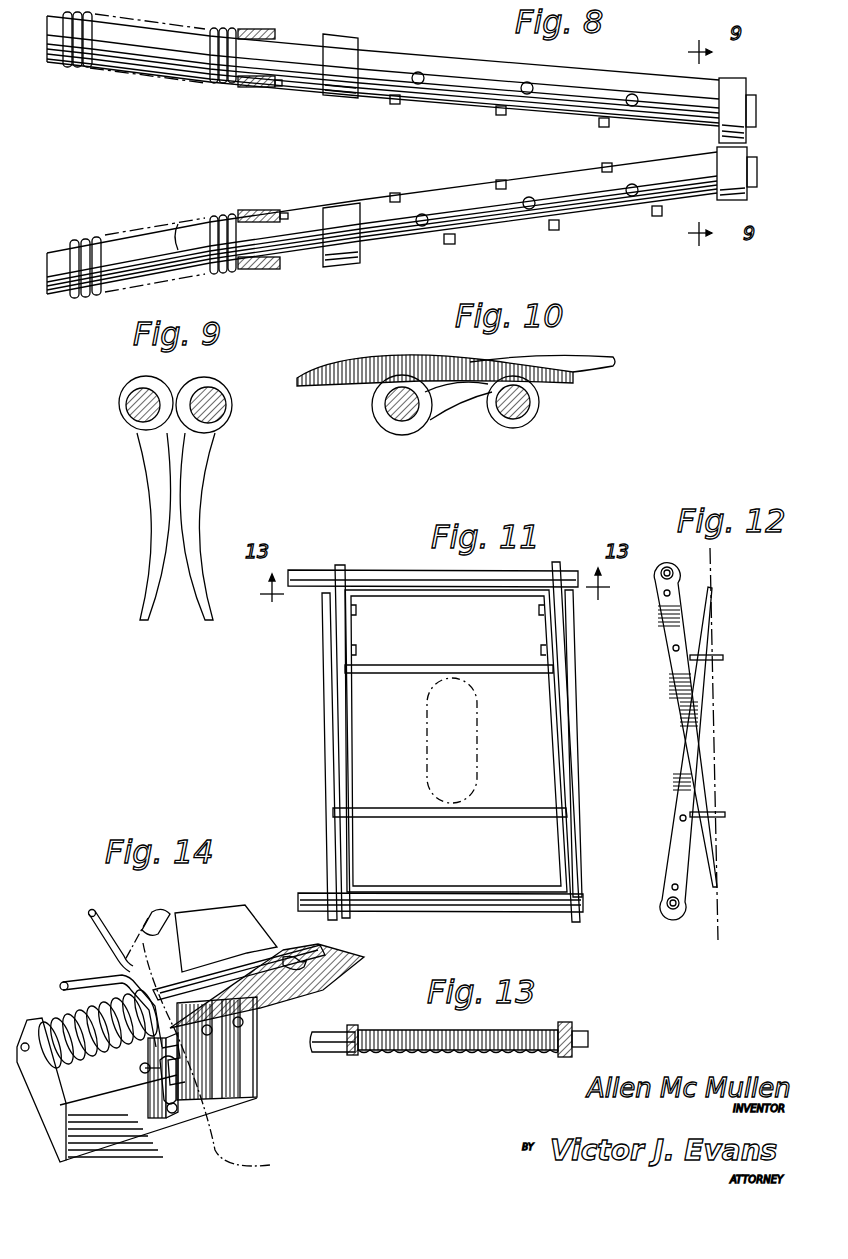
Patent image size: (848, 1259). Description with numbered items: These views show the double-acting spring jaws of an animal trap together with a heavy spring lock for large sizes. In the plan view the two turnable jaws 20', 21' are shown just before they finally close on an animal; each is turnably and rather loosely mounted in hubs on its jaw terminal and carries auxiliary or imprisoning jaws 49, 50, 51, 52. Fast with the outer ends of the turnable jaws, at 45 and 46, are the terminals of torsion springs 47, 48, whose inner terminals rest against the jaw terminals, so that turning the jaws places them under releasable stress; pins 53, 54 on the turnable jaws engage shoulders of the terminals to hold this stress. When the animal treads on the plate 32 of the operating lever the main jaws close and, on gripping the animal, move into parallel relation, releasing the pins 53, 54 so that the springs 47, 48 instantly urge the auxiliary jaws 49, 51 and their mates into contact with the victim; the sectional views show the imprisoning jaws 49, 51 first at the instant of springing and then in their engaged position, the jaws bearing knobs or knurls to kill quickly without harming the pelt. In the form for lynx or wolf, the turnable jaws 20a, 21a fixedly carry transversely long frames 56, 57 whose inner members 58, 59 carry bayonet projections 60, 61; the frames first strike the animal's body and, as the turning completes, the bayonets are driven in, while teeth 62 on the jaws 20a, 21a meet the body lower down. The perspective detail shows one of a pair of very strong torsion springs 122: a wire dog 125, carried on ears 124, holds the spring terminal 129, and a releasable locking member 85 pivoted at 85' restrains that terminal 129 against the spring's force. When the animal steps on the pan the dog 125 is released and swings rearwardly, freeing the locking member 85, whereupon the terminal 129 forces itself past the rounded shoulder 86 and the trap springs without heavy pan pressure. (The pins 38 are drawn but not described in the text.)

In FIG. 8, the outer end of turnable jaw 45 is at (62, 58).
In FIG. 8, the torsion spring 48 is at (226, 85).
In FIG. 8, the pin 54 is at (280, 87).
In FIG. 8, the auxiliary jaw 52 is at (340, 42).
In FIG. 8, the turnable jaw 21' is at (383, 70).
In FIG. 9, the turnable jaw 21' is at (75, 409).
In FIG. 8, the pin 38 is at (393, 105).
In FIG. 8, the auxiliary jaw 51 is at (742, 80).
In FIG. 9, the auxiliary jaw 51 is at (160, 478).
In FIG. 10, the auxiliary jaw 51 is at (575, 371).
In FIG. 8, the torsion spring 47 is at (145, 233).
In FIG. 8, the pin 53 is at (287, 220).
In FIG. 8, the auxiliary jaw 50 is at (338, 264).
In FIG. 8, the outer end of turnable jaw 46 is at (72, 294).
In FIG. 8, the turnable jaw 20' is at (382, 223).
In FIG. 10, the turnable jaw 20' is at (480, 407).
In FIG. 8, the auxiliary jaw 49 is at (748, 196).
In FIG. 9, the auxiliary jaw 49 is at (198, 468).
In FIG. 10, the auxiliary jaw 49 is at (385, 367).
In FIG. 11, the frame 56 is at (323, 690).
In FIG. 12, the frame 56 is at (672, 855).
In FIG. 11, the frame 57 is at (343, 727).
In FIG. 12, the frame 57 is at (661, 630).
In FIG. 13, the frame 57 is at (572, 1027).
In FIG. 11, the inner member 59 is at (380, 673).
In FIG. 11, the inner member 58 is at (425, 813).
In FIG. 11, the plate 32 is at (427, 773).
In FIG. 11, the turnable jaw 21a is at (377, 577).
In FIG. 13, the turnable jaw 21a is at (399, 1031).
In FIG. 11, the turnable jaw 20a is at (428, 900).
In FIG. 12, the bayonet projection 60 is at (722, 657).
In FIG. 12, the bayonet projection 61 is at (724, 816).
In FIG. 13, the teeth 62 is at (463, 1052).
In FIG. 14, the torsion spring 122 is at (52, 1025).
In FIG. 14, the wire dog 125 is at (133, 942).
In FIG. 14, the ears 124 is at (152, 1050).
In FIG. 14, the releasable locking member 85 is at (136, 1088).
In FIG. 14, the pivot 85' is at (159, 1143).
In FIG. 14, the rounded shoulder 86 is at (186, 1078).
In FIG. 14, the spring terminal 129 is at (232, 1170).